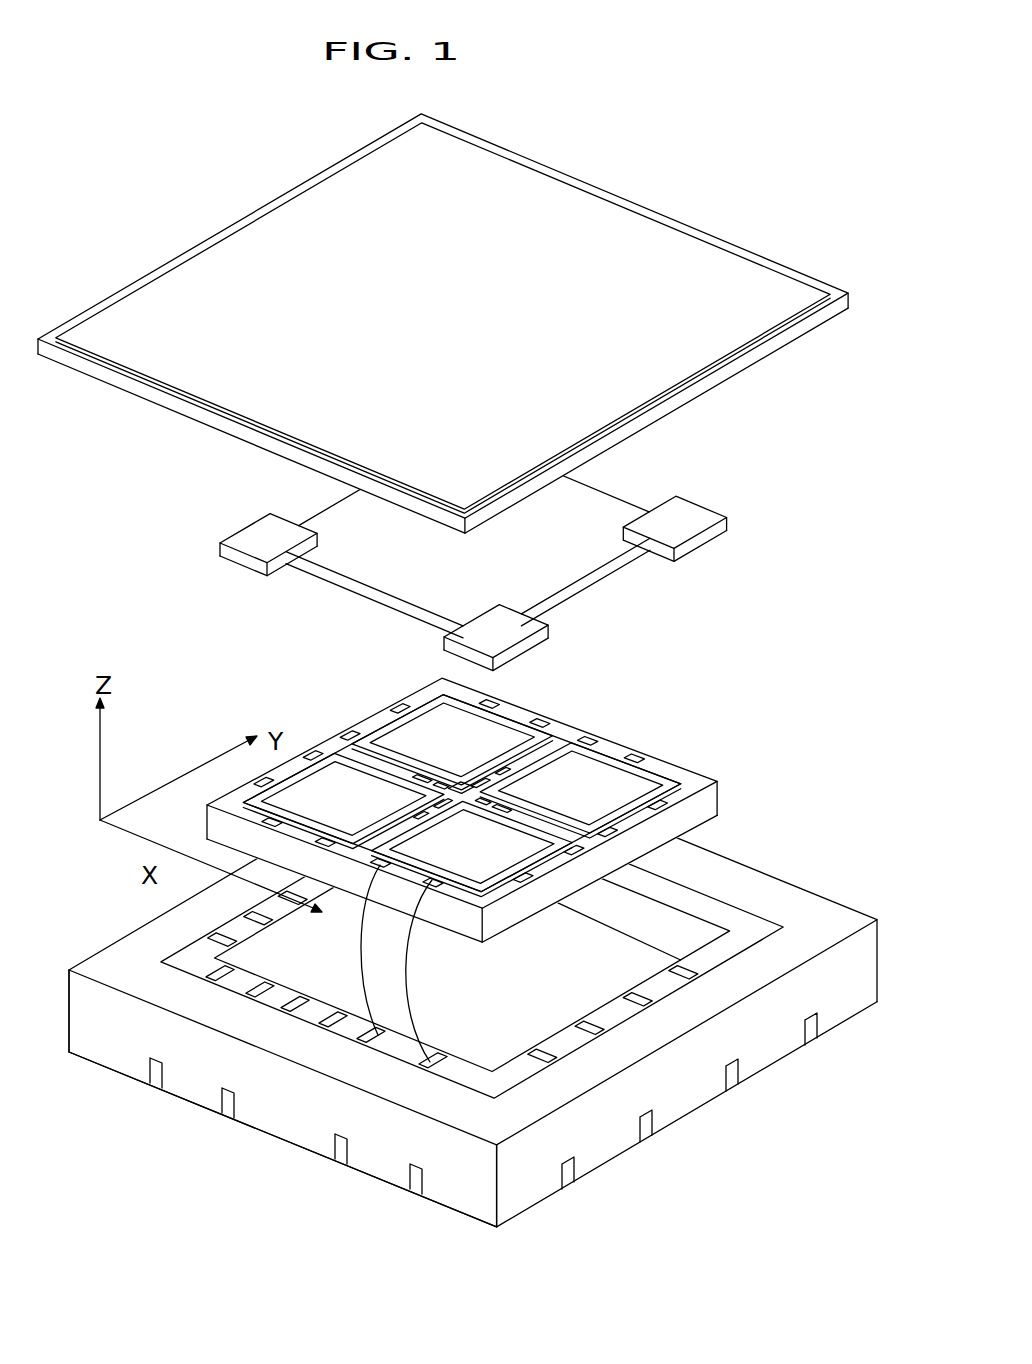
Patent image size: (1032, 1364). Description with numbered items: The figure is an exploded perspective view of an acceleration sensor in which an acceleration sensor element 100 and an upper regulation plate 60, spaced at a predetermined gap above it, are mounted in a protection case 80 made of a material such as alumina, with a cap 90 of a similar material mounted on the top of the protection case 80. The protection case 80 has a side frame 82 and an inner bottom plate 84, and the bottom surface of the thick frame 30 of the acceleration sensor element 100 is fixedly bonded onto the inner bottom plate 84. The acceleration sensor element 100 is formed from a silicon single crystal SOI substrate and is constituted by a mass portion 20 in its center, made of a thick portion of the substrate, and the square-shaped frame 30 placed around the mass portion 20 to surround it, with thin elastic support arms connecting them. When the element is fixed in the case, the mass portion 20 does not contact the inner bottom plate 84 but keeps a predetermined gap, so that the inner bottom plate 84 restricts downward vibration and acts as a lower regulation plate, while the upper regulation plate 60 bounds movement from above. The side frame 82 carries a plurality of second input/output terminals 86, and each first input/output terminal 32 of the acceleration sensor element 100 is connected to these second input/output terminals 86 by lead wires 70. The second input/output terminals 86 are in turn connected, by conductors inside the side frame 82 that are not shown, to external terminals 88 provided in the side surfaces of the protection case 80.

The acceleration sensor element 100 is at (541, 790).
The cap 90 is at (762, 350).
The upper regulation plate 60 is at (700, 540).
The frame 30 is at (673, 776).
The first input/output terminals 32 is at (358, 722).
The mass portion 20 is at (568, 790).
The lead wires 70 is at (407, 978).
The protection case 80 is at (473, 1001).
The side frame 82 is at (112, 1035).
The inner bottom plate 84 is at (540, 1012).
The second input/output terminals 86 is at (380, 1030).
The external terminals 88 is at (223, 1107).